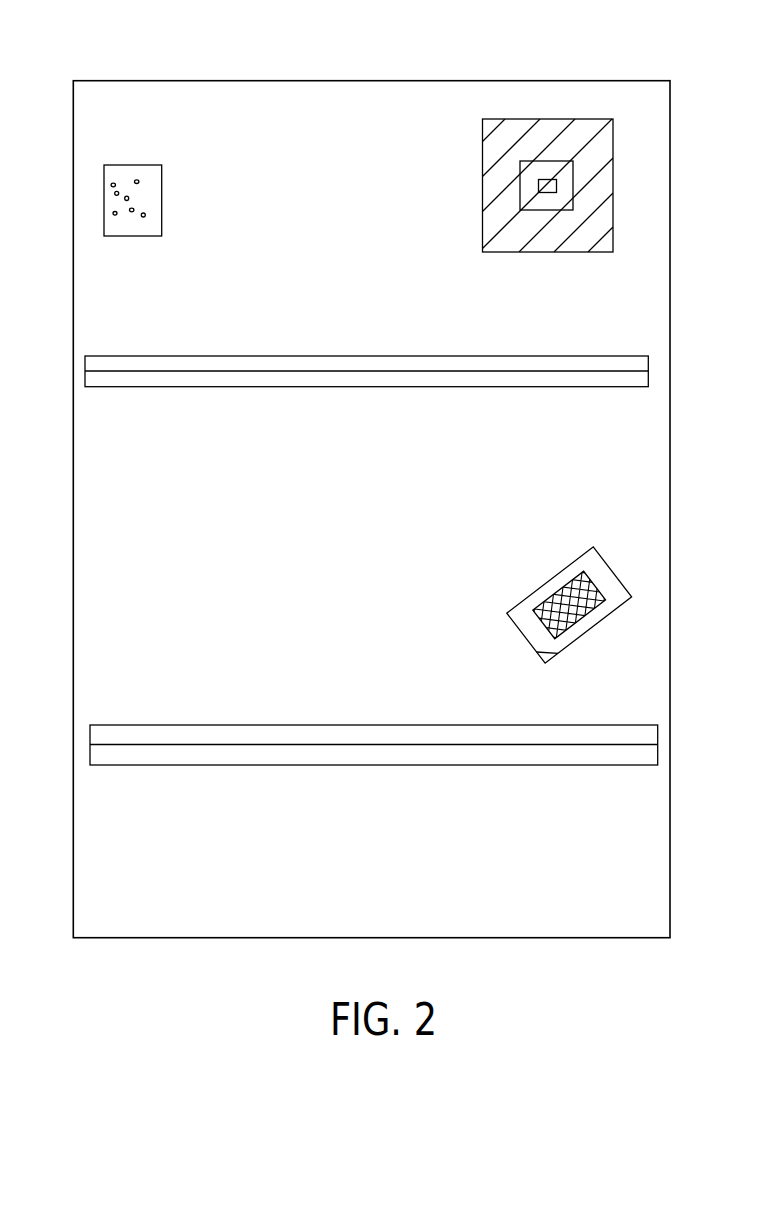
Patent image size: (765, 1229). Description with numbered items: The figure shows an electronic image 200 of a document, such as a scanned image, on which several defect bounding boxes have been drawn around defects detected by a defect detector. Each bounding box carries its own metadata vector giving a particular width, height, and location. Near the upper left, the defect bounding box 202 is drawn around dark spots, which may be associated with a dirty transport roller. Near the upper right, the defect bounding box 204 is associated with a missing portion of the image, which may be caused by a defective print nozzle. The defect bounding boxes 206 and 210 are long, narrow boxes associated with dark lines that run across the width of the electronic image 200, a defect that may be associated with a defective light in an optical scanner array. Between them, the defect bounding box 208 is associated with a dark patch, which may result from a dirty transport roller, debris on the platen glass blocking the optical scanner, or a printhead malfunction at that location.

The electronic image 200 is at (513, 80).
The defect bounding box 202 is at (163, 198).
The defect bounding box 204 is at (520, 190).
The defect bounding box 206 is at (383, 355).
The defect bounding box 208 is at (581, 546).
The defect bounding box 210 is at (402, 724).